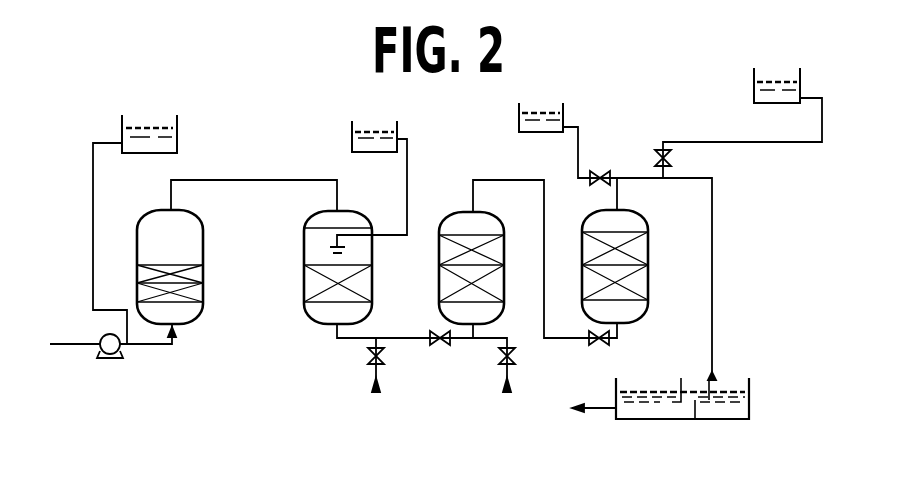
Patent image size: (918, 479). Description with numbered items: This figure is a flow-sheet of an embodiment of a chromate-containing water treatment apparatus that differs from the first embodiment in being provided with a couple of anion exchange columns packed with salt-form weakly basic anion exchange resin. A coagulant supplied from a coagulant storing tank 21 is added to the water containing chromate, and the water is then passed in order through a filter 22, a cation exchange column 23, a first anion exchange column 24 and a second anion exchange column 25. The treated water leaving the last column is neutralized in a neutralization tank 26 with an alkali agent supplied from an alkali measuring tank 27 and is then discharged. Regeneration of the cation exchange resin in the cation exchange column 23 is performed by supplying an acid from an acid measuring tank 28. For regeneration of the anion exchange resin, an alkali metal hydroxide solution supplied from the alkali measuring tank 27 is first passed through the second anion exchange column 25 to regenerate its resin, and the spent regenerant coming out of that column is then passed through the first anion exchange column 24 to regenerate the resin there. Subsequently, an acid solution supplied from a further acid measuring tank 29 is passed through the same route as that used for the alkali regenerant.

The coagulant storing tank 21 is at (177, 132).
The filter 22 is at (203, 250).
The cation exchange column 23 is at (372, 255).
The No. 1 anion exchange column 24 is at (504, 255).
The No. 2 anion exchange column 25 is at (648, 248).
The neutralization tank 26 is at (749, 390).
The alkali measuring tank 27 is at (754, 93).
The acid measuring tank 28 is at (397, 130).
The acid measuring tank 29 is at (563, 112).